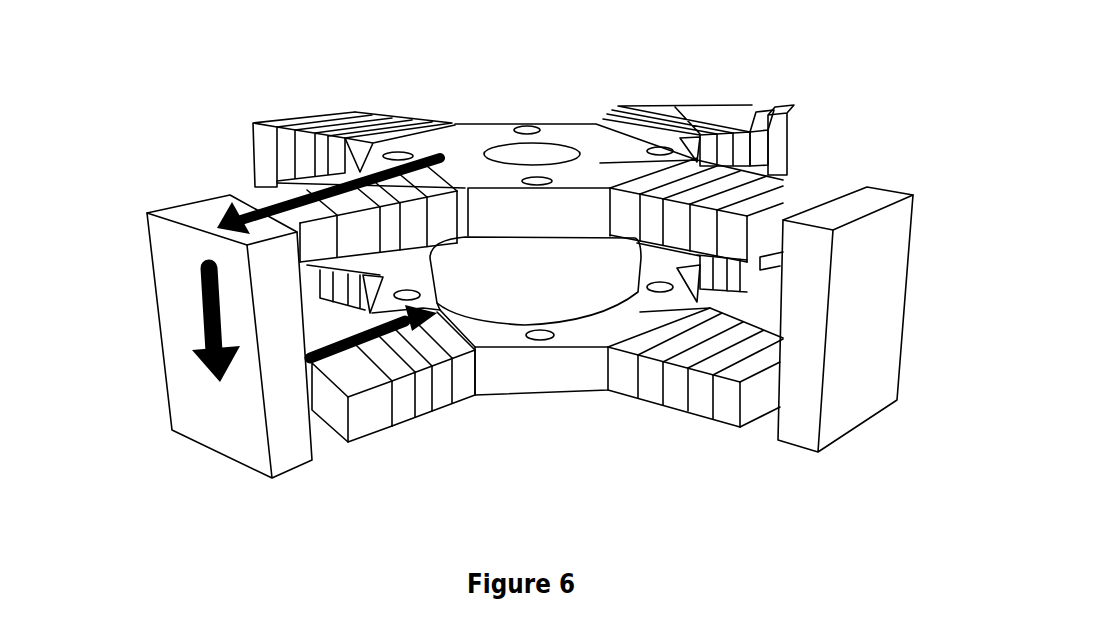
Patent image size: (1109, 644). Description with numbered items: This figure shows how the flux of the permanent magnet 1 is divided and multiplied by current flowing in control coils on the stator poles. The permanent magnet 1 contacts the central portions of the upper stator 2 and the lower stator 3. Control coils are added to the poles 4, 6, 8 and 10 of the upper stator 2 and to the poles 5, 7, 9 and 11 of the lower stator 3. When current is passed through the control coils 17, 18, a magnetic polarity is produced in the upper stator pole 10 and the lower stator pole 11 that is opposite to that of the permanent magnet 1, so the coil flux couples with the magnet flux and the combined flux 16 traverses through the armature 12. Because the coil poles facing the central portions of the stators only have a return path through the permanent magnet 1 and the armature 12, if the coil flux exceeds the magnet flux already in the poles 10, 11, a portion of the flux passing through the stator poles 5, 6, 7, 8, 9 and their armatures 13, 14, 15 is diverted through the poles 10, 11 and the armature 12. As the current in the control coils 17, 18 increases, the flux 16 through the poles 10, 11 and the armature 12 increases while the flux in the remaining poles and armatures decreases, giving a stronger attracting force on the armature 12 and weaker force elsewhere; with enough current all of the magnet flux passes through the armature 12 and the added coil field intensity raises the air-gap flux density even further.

The permanent magnet 1 is at (600, 293).
The upper stator 2 is at (491, 137).
The lower stator 3 is at (538, 356).
The stator pole 4 is at (829, 191).
The stator pole 5 is at (733, 403).
The stator pole 6 is at (757, 131).
The stator pole 7 is at (743, 273).
The stator pole 8 is at (300, 139).
The stator pole 9 is at (309, 285).
The upper stator pole 10 is at (236, 207).
The lower stator pole 11 is at (324, 402).
The armature 12 is at (250, 420).
The armature 13 is at (833, 405).
The armature 14 is at (787, 130).
The armature 15 is at (358, 103).
The flux 16 is at (213, 218).
The control coil 17 is at (395, 438).
The control coil 18 is at (252, 185).